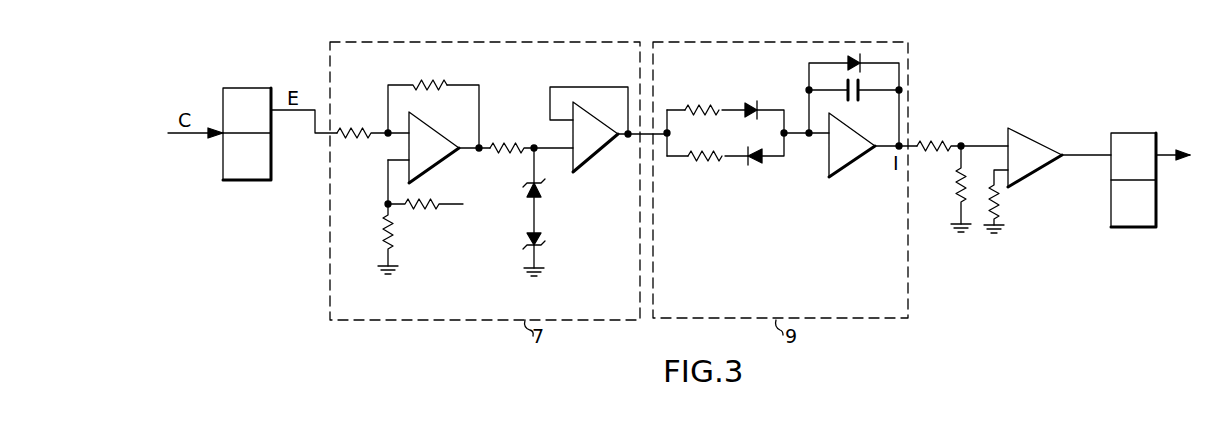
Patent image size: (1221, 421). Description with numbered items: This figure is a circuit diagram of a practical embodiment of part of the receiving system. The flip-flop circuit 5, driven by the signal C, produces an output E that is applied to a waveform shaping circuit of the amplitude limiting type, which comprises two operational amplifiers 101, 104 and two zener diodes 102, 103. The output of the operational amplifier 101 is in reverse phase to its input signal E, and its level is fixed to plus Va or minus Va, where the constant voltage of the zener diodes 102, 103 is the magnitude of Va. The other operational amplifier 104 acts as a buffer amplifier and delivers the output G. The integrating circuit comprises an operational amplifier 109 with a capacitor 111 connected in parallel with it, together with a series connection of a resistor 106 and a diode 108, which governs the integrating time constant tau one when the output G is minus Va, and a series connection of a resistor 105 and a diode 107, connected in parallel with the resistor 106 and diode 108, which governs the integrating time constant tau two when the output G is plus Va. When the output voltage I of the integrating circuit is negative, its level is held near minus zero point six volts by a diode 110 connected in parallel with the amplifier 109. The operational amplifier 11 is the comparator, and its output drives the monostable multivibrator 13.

The flip-flop circuit 5 is at (240, 88).
The operational amplifier 11 is at (1036, 133).
The monostable multivibrator 13 is at (1134, 133).
The operational amplifier 101 is at (440, 166).
The zener diode 102 is at (543, 193).
The zener diode 103 is at (553, 243).
The operational amplifier 104 is at (590, 160).
The resistor 105 is at (698, 107).
The resistor 106 is at (693, 159).
The diode 107 is at (751, 102).
The diode 108 is at (756, 162).
The operational amplifier 109 is at (846, 168).
The diode 110 is at (862, 58).
The capacitor 111 is at (855, 95).